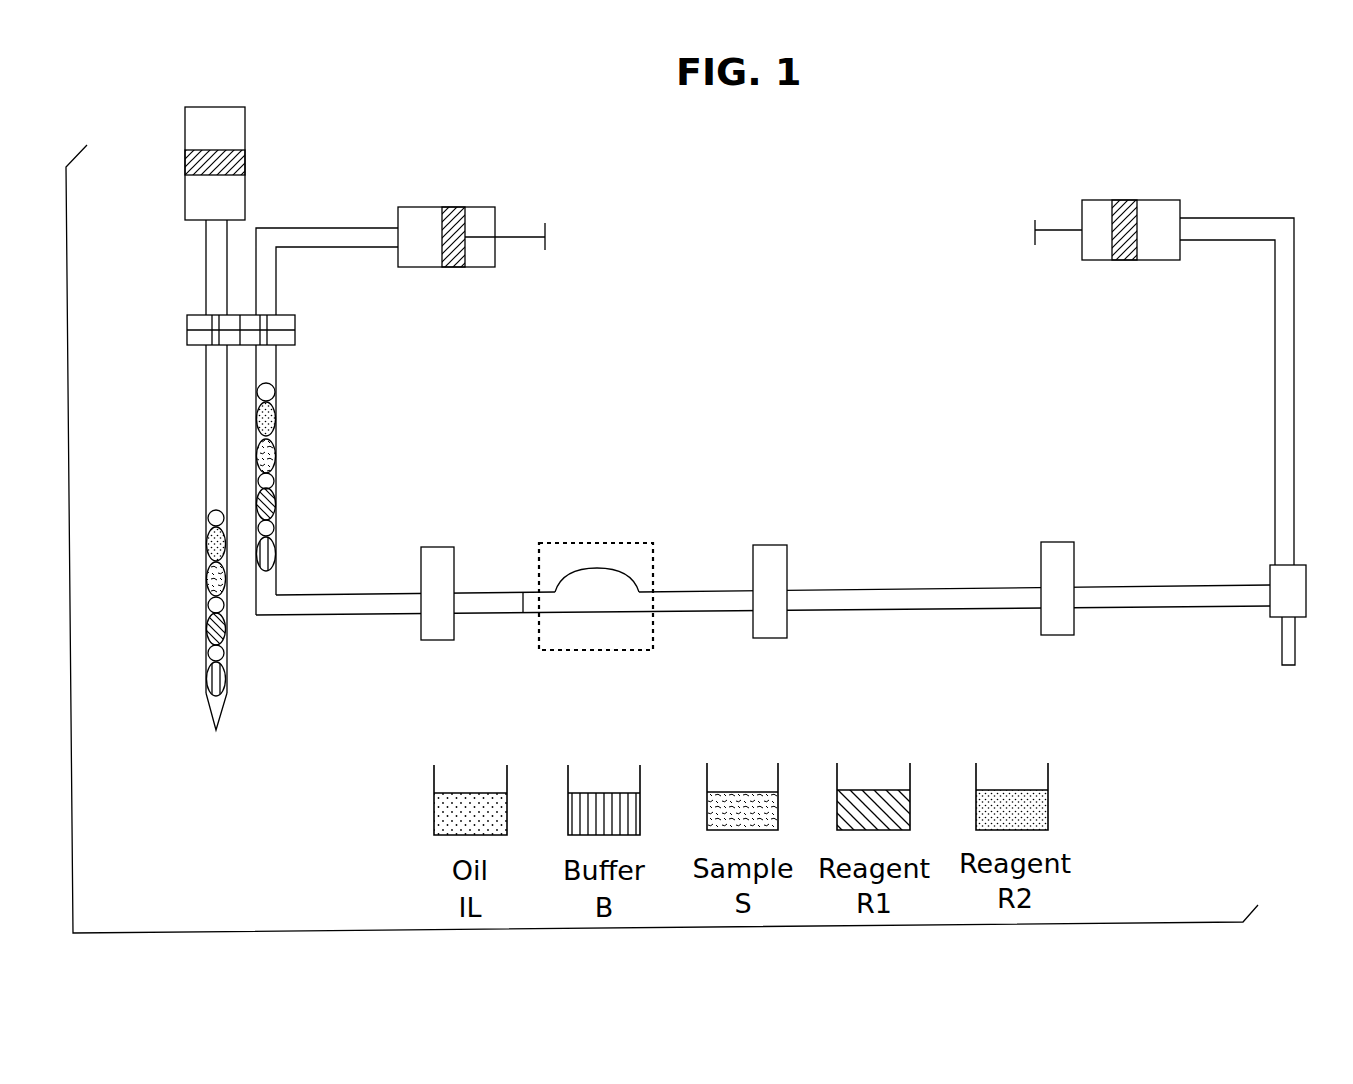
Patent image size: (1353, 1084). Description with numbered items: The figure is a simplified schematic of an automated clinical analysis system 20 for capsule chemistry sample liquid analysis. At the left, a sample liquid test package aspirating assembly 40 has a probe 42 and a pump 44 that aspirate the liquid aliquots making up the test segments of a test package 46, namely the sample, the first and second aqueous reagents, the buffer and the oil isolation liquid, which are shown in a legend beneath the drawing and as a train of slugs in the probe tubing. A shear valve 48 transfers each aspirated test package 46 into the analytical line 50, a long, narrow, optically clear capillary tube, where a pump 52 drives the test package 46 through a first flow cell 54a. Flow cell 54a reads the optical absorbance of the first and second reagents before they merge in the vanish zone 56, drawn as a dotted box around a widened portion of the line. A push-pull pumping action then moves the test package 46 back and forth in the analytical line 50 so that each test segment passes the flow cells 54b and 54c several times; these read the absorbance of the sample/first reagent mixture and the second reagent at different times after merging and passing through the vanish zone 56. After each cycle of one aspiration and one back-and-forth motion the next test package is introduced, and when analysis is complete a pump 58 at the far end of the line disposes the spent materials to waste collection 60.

The automated clinical analysis system 20 is at (697, 255).
The sample liquid test package aspirating assembly 40 is at (185, 521).
The probe 42 is at (250, 727).
The pump 44 is at (232, 107).
The test package 46 is at (210, 583).
The shear valve 48 is at (285, 315).
The analytical line 50 is at (880, 590).
The pump 52 is at (467, 207).
The flow cell 54a is at (443, 547).
The flow cell 54b is at (777, 638).
The flow cell 54c is at (1063, 542).
The vanish zone 56 is at (649, 543).
The pump 58 is at (1140, 200).
The waste collection 60 is at (1306, 600).